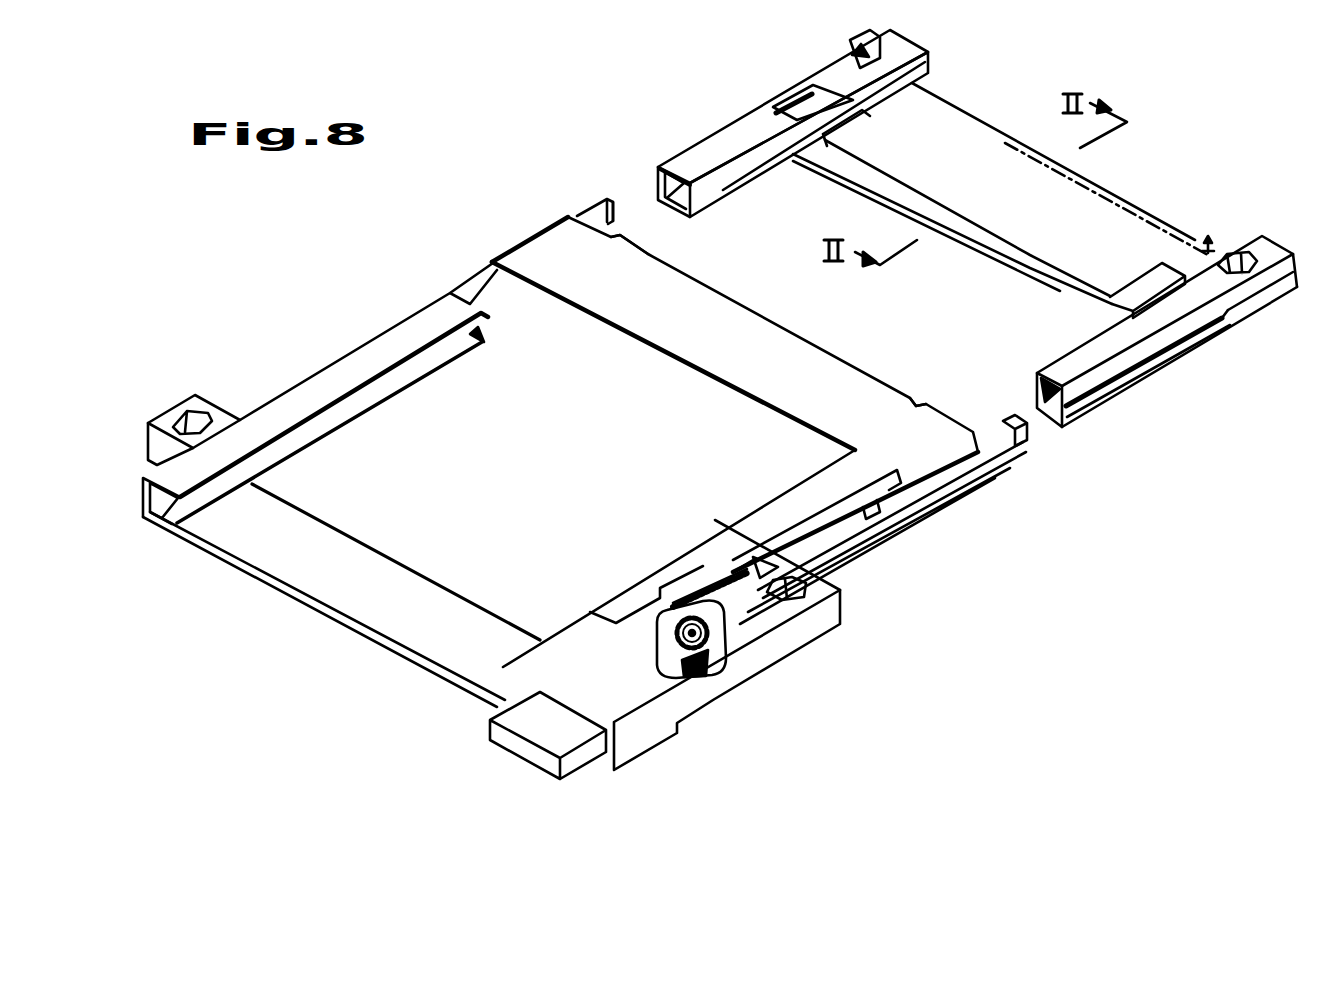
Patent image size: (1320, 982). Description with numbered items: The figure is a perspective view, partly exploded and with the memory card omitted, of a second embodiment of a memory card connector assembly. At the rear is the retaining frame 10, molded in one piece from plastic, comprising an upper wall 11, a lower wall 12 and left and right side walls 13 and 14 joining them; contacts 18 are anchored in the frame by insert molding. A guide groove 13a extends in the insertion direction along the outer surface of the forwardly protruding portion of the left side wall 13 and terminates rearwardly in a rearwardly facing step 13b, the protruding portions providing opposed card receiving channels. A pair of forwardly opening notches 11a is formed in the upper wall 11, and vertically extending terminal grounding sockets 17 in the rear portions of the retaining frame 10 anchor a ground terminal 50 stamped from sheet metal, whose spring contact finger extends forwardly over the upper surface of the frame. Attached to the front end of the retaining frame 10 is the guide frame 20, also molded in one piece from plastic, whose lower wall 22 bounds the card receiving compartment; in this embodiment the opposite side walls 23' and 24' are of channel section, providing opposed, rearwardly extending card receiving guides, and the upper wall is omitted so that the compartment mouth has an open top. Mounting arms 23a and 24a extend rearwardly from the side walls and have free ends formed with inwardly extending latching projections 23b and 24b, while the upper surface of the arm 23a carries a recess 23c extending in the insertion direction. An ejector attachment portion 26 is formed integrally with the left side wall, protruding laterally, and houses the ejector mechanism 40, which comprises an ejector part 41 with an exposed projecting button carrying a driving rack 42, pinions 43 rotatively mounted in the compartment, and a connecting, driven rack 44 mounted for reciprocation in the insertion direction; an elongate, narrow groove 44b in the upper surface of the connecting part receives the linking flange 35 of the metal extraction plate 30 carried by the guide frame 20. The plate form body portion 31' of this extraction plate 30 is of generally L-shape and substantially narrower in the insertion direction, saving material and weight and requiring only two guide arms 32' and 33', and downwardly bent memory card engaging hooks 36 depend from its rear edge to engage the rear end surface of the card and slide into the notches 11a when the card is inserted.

The retaining frame 10 is at (1165, 382).
The upper wall 11 is at (1080, 208).
The notches 11a is at (1152, 290).
The lower wall 12 is at (1025, 262).
The left side wall 13 is at (1210, 292).
The guide groove 13a is at (1120, 370).
The step 13b is at (1210, 322).
The right side wall 14 is at (740, 150).
The terminal grounding socket 17 is at (1248, 252).
The contacts 18 is at (1210, 240).
The guide frame 20 is at (862, 623).
The lower wall 22 is at (395, 632).
The left side wall 23' is at (875, 546).
The mounting arm 23a is at (940, 465).
The latching projection 23b is at (1005, 418).
The recess 23c is at (882, 510).
The right side wall 24' is at (320, 393).
The mounting arm 24a is at (586, 205).
The latching projection 24b is at (616, 214).
The ejector attachment portion 26 is at (790, 645).
The extraction plate 30 is at (487, 246).
The plate form body portion 31' is at (735, 334).
The guide arm 32' is at (898, 512).
The guide arm 33' is at (527, 227).
The linking flange 35 is at (718, 570).
The memory card engaging hooks 36 is at (650, 254).
The ejector mechanism 40 is at (716, 643).
The ejector part 41 is at (568, 737).
The driving rack 42 is at (706, 672).
The pinions 43 is at (663, 648).
The connecting driven rack 44 is at (738, 589).
The groove 44b is at (655, 598).
The ground terminal 50 is at (813, 107).